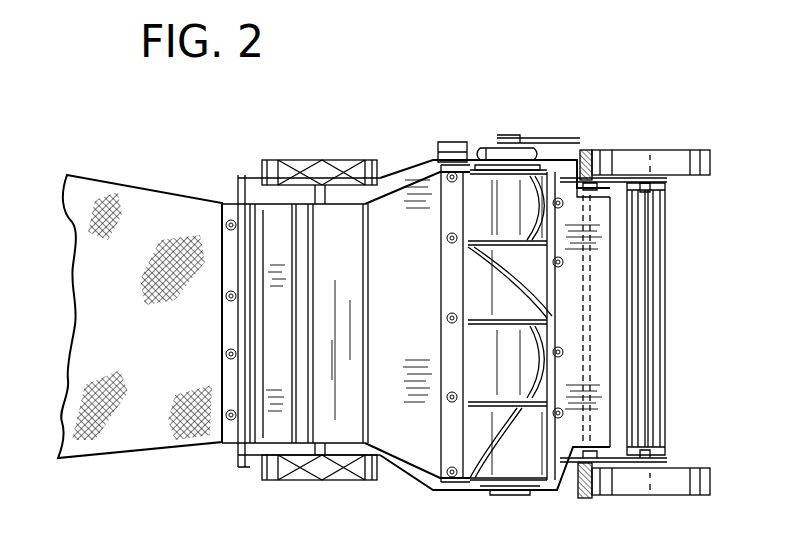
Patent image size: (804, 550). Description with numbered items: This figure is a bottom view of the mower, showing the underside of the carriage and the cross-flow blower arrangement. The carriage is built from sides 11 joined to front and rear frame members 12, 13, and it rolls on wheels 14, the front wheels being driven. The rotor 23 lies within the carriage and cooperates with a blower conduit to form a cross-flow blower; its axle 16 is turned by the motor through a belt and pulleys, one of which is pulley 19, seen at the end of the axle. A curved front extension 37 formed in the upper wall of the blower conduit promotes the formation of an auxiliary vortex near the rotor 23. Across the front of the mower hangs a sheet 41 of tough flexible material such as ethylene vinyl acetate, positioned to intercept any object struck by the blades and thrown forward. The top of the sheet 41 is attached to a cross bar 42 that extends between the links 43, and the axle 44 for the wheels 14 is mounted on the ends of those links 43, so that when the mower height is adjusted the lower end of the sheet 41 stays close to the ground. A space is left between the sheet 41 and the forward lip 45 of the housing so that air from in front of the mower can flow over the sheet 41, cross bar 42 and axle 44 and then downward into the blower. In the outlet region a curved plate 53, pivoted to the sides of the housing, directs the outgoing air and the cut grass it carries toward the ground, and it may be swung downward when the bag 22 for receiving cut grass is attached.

The sides 11 is at (350, 210).
The front frame member 12 is at (660, 312).
The rear frame member 13 is at (240, 333).
The wheels 14 is at (338, 166).
The axle 16 is at (518, 450).
The pulley 19 is at (480, 148).
The bag 22 is at (92, 318).
The rotor 23 is at (526, 300).
The curved front extension 37 is at (598, 398).
The sheet 41 is at (637, 352).
The cross bar 42 is at (628, 225).
The links 43 is at (618, 192).
The axle 44 is at (648, 250).
The forward lip 45 is at (655, 288).
The curved plate 53 is at (342, 330).